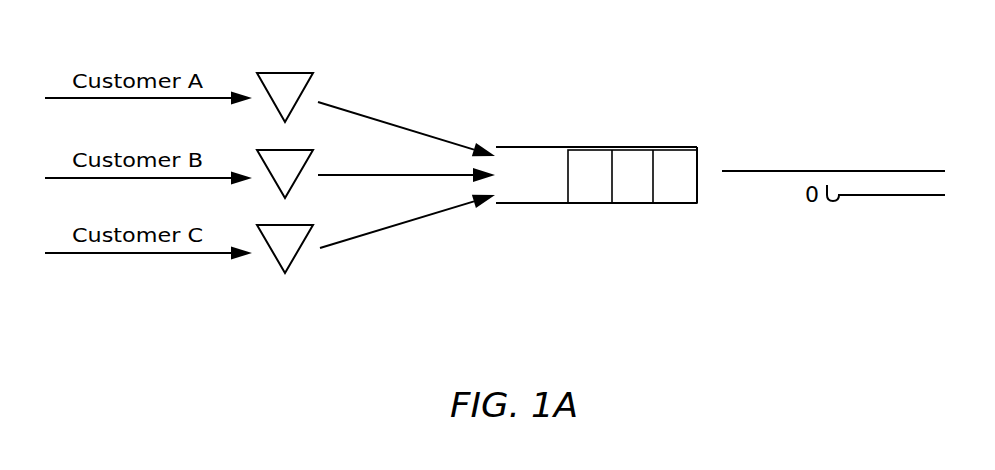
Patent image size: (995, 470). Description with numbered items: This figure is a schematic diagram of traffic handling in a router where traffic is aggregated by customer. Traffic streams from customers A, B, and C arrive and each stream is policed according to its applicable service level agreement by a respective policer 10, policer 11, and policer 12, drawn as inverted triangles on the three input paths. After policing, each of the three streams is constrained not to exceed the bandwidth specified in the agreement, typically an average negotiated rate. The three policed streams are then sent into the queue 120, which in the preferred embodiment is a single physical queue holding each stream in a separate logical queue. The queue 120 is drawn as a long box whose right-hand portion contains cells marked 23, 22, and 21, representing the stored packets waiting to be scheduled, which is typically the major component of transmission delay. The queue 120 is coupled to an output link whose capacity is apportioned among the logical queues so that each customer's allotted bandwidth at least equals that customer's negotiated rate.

The policer 10 is at (310, 75).
The policer 11 is at (310, 183).
The policer 12 is at (312, 260).
The queue 120 is at (612, 210).
The queue entry 21 is at (660, 191).
The queue entry 22 is at (619, 191).
The queue entry 23 is at (578, 191).